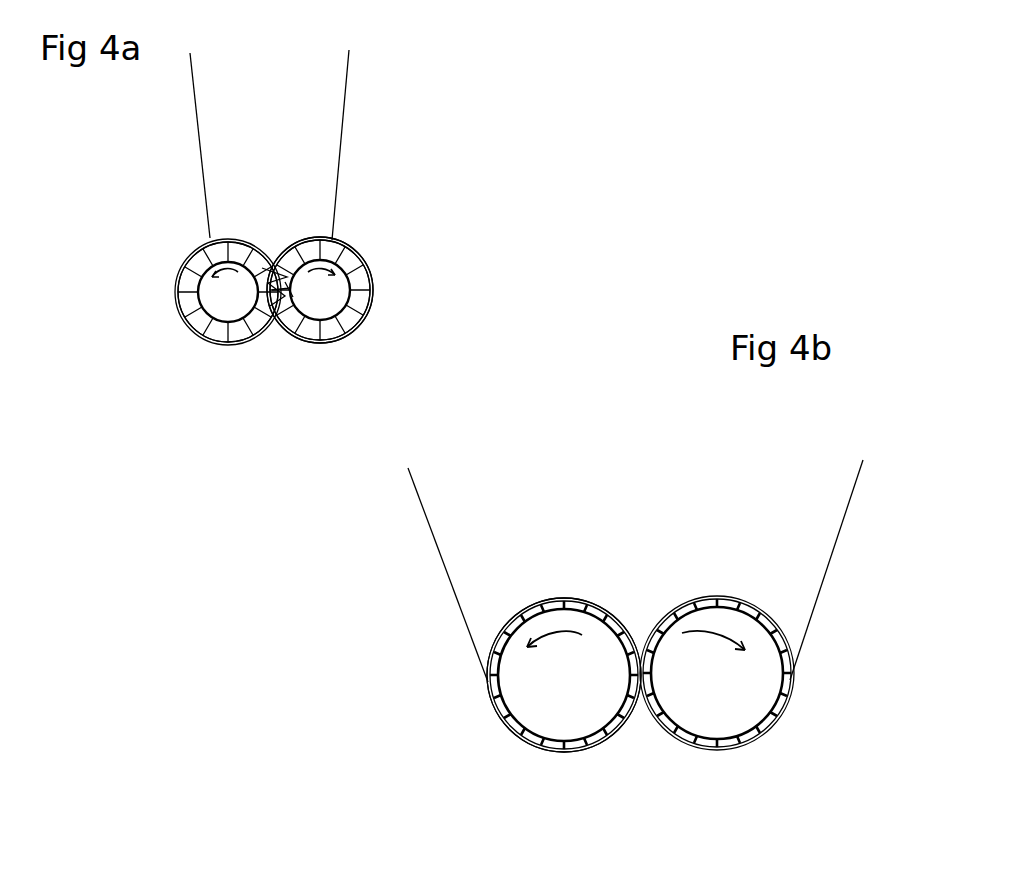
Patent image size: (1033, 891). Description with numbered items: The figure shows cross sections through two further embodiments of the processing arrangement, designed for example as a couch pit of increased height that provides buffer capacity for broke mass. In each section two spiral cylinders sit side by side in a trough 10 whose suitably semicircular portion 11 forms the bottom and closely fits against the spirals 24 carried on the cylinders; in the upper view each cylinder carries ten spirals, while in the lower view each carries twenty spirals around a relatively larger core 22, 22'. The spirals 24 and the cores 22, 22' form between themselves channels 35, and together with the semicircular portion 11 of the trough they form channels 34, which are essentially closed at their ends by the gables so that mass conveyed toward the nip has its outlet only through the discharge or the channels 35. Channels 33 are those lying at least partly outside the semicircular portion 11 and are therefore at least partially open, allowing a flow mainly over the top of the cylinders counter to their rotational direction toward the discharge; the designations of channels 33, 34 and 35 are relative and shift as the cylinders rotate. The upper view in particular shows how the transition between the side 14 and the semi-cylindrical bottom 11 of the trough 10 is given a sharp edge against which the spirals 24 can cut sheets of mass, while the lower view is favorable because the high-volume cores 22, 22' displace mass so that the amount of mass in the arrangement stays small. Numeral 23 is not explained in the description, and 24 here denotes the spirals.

In FIG. 4a, the trough 10 is at (263, 155).
In FIG. 4a, the semicircular portion of the trough 11 is at (368, 272).
In FIG. 4b, the semicircular portion of the trough 11 is at (500, 723).
In FIG. 4a, the side of the trough 14 is at (346, 92).
In FIG. 4b, the side of the trough 14 is at (422, 503).
In FIG. 4b, the core 22 is at (717, 583).
In FIG. 4b, the core 22' is at (564, 586).
In FIG. 4a, the first roller 23 is at (187, 263).
In FIG. 4a, the spiral 24 is at (328, 252).
In FIG. 4a, the channels 33 is at (315, 243).
In FIG. 4b, the channels 33 is at (790, 645).
In FIG. 4a, the channels 34 is at (342, 253).
In FIG. 4b, the channels 34 is at (670, 727).
In FIG. 4a, the channels 35 is at (260, 296).
In FIG. 4b, the channels 35 is at (640, 678).